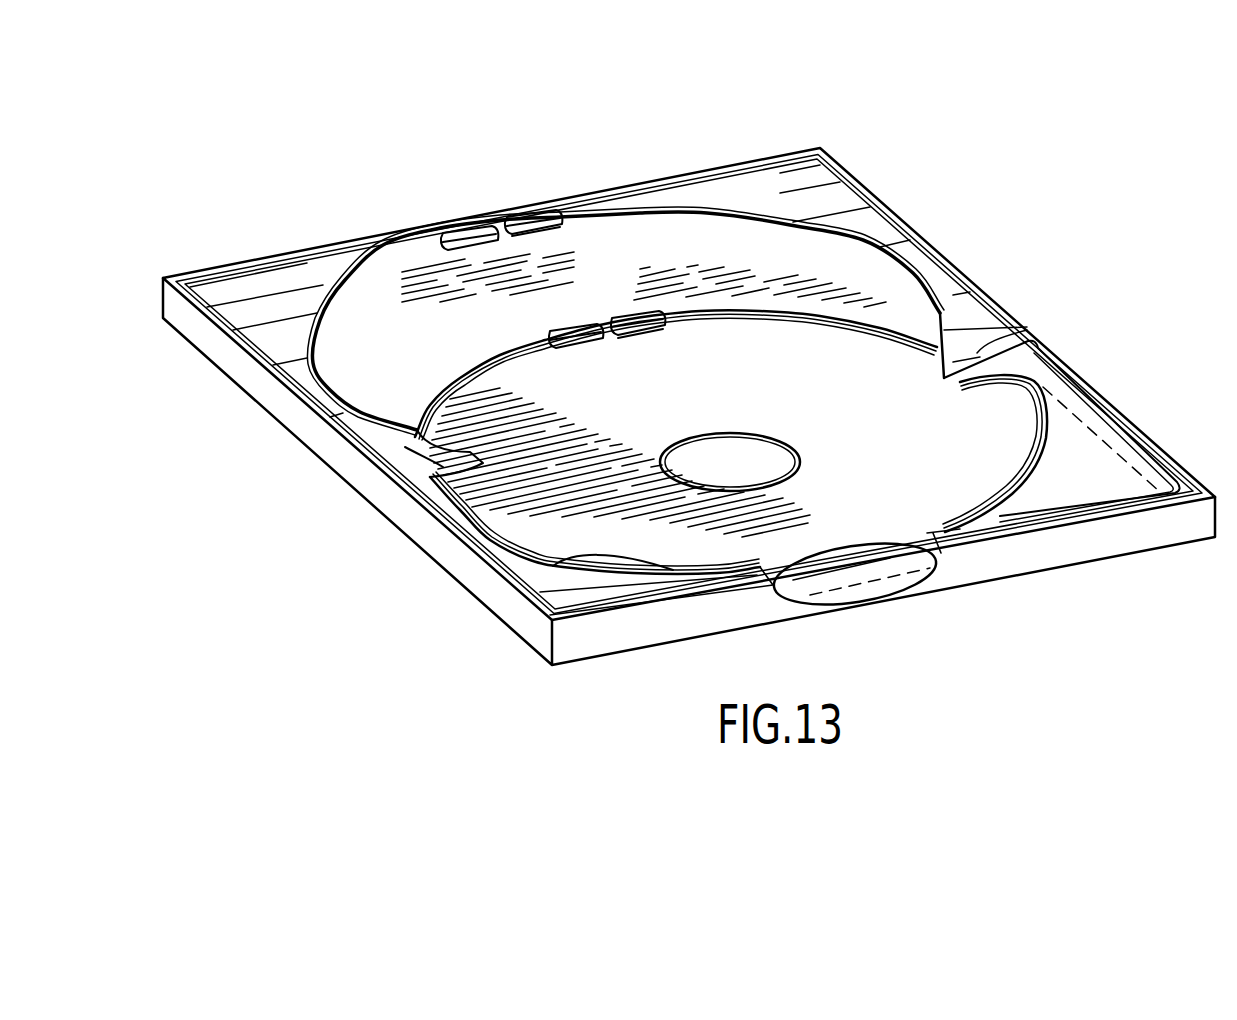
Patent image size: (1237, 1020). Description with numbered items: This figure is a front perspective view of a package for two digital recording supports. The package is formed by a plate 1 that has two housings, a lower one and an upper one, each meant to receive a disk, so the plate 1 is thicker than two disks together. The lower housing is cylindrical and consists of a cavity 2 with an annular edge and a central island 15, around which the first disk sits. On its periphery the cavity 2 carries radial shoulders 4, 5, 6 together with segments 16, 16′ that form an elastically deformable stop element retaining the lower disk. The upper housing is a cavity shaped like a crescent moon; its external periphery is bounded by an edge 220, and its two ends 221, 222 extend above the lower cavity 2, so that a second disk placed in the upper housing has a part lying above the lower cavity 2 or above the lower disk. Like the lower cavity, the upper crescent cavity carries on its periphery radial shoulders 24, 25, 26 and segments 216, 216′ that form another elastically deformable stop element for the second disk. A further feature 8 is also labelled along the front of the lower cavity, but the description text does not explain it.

The plate 1 is at (460, 689).
The cavity 2 is at (1000, 453).
The radial shoulder 4 is at (635, 340).
The radial shoulder 5 is at (1033, 467).
The radial shoulder 6 is at (567, 563).
The finger recess 8 is at (860, 585).
The central island 15 is at (778, 456).
The segment 16 is at (545, 333).
The segment 16′ is at (637, 316).
The radial shoulder 24 is at (540, 242).
The radial shoulder 25 is at (957, 336).
The radial shoulder 26 is at (437, 443).
The segment 216 is at (465, 230).
The segment 216′ is at (550, 212).
The edge 220 is at (377, 264).
The end 221 is at (443, 463).
The end 222 is at (980, 352).